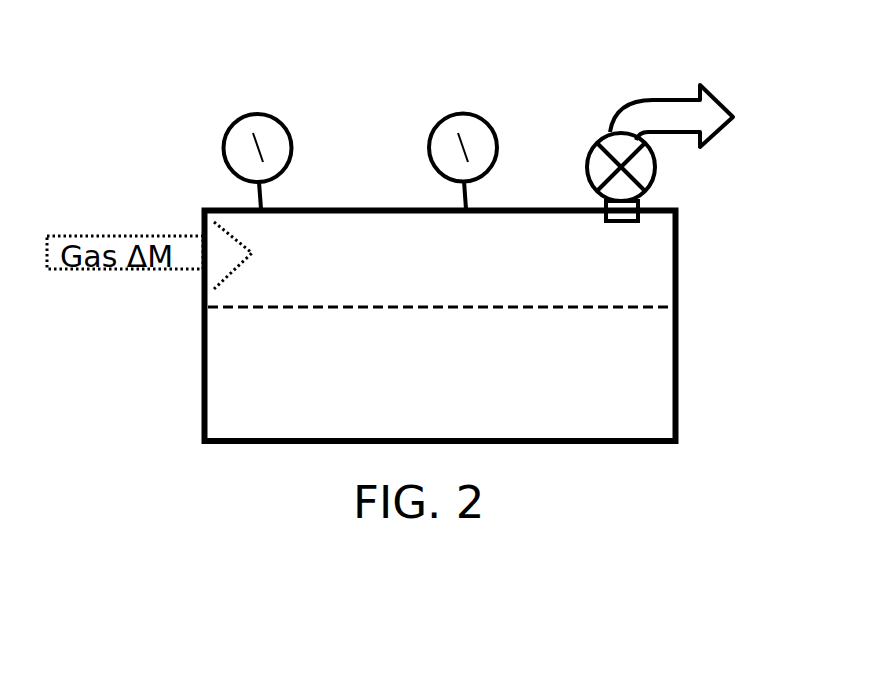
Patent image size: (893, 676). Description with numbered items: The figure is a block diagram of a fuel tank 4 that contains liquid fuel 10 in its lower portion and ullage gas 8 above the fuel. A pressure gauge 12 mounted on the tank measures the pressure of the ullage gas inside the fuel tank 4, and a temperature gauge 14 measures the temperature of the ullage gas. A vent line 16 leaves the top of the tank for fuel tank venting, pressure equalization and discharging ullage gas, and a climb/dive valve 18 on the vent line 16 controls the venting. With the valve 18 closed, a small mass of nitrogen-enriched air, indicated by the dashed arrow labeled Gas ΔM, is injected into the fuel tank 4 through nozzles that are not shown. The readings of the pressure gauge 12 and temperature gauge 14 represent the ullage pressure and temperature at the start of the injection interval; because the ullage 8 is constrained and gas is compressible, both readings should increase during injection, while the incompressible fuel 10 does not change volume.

The fuel tank 4 is at (203, 362).
The ullage gas 8 is at (676, 262).
The liquid fuel 10 is at (676, 395).
The pressure gauge 12 is at (223, 136).
The temperature gauge 14 is at (430, 141).
The vent line 16 is at (653, 99).
The climb/dive valve 18 is at (658, 188).